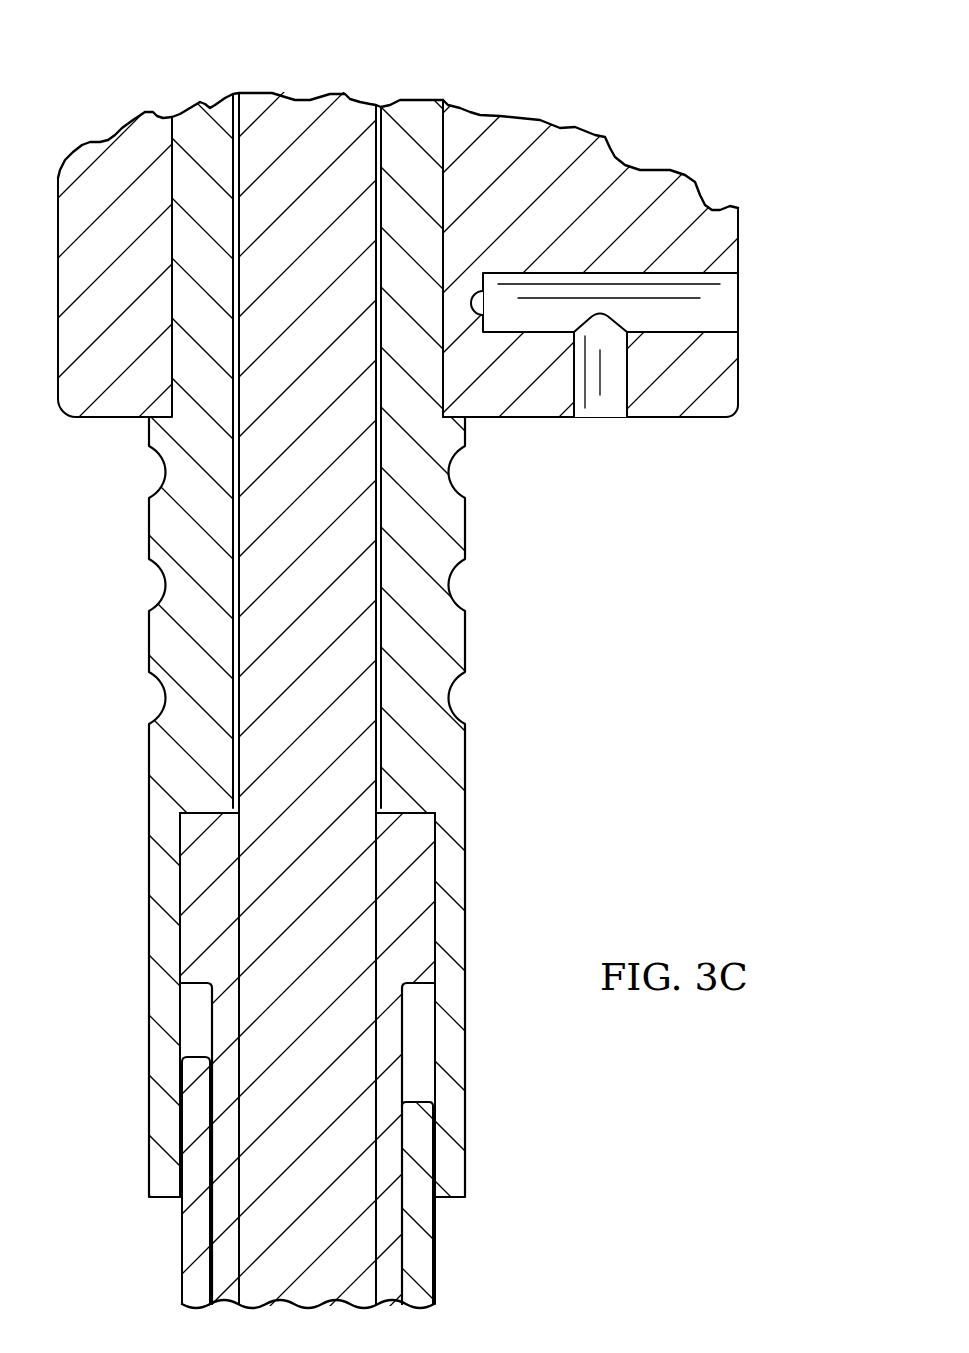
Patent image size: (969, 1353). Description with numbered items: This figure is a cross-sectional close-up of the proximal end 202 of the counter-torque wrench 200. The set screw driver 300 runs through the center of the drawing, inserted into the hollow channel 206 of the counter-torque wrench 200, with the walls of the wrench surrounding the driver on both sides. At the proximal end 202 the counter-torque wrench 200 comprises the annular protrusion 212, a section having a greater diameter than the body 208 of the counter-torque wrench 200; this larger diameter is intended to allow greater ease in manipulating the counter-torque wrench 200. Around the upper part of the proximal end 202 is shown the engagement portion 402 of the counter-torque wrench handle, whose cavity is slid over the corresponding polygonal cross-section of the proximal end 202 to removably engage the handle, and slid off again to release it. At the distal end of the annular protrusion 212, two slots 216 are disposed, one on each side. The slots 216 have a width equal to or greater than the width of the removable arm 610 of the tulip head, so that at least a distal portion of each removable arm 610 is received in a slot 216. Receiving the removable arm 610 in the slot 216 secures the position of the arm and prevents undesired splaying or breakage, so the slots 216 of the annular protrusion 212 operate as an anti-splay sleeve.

The counter-torque wrench 200 is at (533, 1244).
The proximal end 202 is at (556, 571).
The hollow channel 206 is at (239, 66).
The body 208 is at (472, 1224).
The annular protrusion 212 is at (468, 642).
The slot 216 is at (190, 1008).
The set screw driver 300 is at (308, 90).
The engagement portion 402 is at (663, 171).
The removable arm 610 is at (180, 1250).